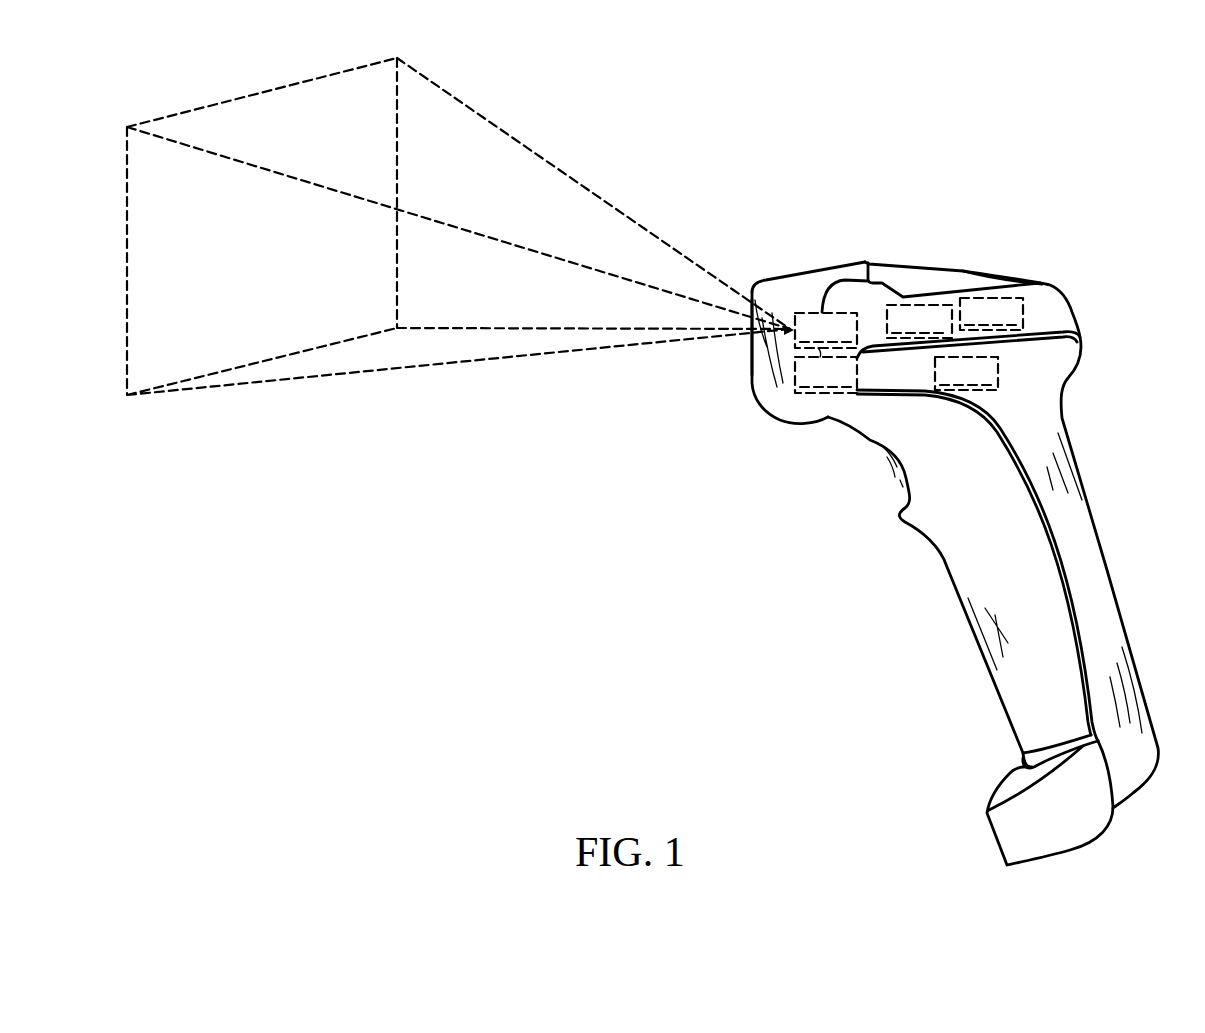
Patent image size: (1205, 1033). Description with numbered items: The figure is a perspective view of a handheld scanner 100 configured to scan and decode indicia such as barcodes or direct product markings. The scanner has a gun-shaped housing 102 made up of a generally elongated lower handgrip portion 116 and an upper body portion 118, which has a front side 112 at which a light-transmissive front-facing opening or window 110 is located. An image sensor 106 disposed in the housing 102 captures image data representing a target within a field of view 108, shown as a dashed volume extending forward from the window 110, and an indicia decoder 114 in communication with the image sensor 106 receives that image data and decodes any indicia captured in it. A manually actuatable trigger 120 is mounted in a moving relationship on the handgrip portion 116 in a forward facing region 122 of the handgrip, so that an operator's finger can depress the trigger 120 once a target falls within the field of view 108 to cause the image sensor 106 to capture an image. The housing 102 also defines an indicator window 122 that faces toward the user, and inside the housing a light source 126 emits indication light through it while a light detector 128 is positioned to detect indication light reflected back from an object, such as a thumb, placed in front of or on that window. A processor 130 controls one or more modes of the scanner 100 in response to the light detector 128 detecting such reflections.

The handheld scanner 100 is at (1083, 158).
The housing 102 is at (843, 264).
The image sensor 106 is at (826, 335).
The field of view 108 is at (450, 95).
The front-facing opening or window 110 is at (752, 352).
The front side 112 is at (740, 415).
The indicia decoder 114 is at (826, 375).
The handgrip portion 116 is at (1108, 562).
The upper body portion 118 is at (1060, 305).
The trigger 120 is at (900, 508).
The indicator window 122 is at (996, 280).
The light source 126 is at (919, 321).
The light detector 128 is at (991, 314).
The processor 130 is at (966, 373).